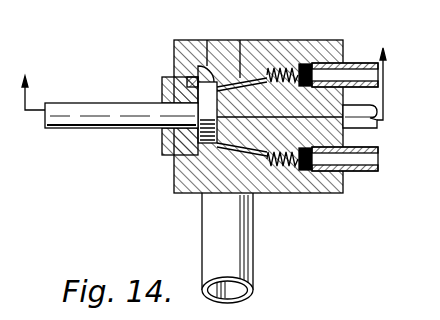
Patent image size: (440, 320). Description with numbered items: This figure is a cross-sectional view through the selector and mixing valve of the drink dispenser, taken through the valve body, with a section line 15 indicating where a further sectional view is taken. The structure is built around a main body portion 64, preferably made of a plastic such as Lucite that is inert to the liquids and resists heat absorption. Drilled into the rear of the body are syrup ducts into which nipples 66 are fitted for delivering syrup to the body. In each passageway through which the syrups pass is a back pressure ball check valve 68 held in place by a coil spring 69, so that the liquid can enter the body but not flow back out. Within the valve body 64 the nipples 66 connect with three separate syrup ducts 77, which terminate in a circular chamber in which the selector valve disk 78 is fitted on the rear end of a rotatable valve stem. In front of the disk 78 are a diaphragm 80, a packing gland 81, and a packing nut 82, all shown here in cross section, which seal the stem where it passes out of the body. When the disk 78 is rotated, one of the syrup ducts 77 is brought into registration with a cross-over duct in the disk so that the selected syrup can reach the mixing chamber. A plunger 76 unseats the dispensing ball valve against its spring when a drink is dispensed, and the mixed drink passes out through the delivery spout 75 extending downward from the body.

The section line 15— 15 is at (197, 97).
The main body portion 64 is at (250, 52).
The nipples 66 is at (360, 63).
The back pressure ball check valves 68 is at (314, 63).
The coil spring 69 is at (288, 63).
The delivery spout 75 is at (235, 250).
The plunger 76 is at (84, 103).
The syrup ducts 77 is at (234, 48).
The selector valve disk 78 is at (173, 155).
The diaphragm 80 is at (207, 40).
The packing gland 81 is at (163, 92).
The packing nut 82 is at (172, 77).